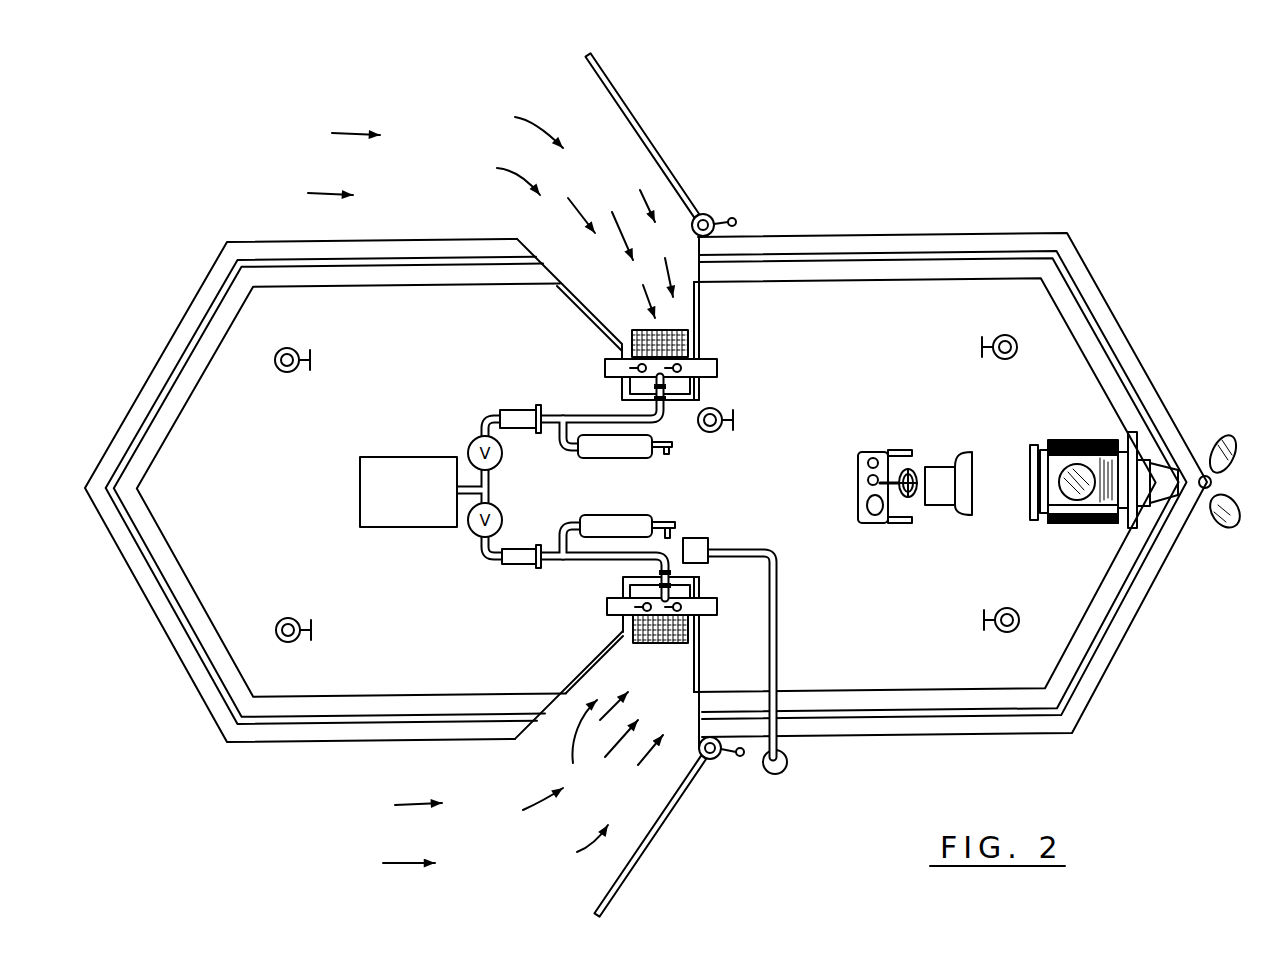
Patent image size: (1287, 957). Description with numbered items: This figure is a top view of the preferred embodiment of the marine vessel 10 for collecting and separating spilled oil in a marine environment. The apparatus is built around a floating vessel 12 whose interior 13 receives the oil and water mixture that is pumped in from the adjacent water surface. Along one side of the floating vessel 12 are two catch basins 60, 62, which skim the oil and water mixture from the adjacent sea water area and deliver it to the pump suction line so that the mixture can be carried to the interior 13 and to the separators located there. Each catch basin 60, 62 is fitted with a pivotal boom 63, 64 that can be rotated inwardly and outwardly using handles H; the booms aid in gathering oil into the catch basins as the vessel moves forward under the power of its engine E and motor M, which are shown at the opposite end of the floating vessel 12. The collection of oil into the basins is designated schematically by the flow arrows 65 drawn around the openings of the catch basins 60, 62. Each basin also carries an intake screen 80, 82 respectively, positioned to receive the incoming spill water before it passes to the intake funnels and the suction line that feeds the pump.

The marine vessel 10 is at (1172, 285).
The floating vessel 12 is at (290, 745).
The interior 13 is at (423, 610).
The catch basin 60 is at (617, 740).
The catch basin 62 is at (620, 248).
The pivotal boom 63 is at (713, 757).
The pivotal boom 64 is at (712, 215).
The flow arrows 65 is at (357, 135).
The intake screen 80 is at (690, 628).
The intake screen 82 is at (688, 342).
The engine E is at (1073, 440).
The handles H is at (736, 220).
The motor M is at (1222, 442).